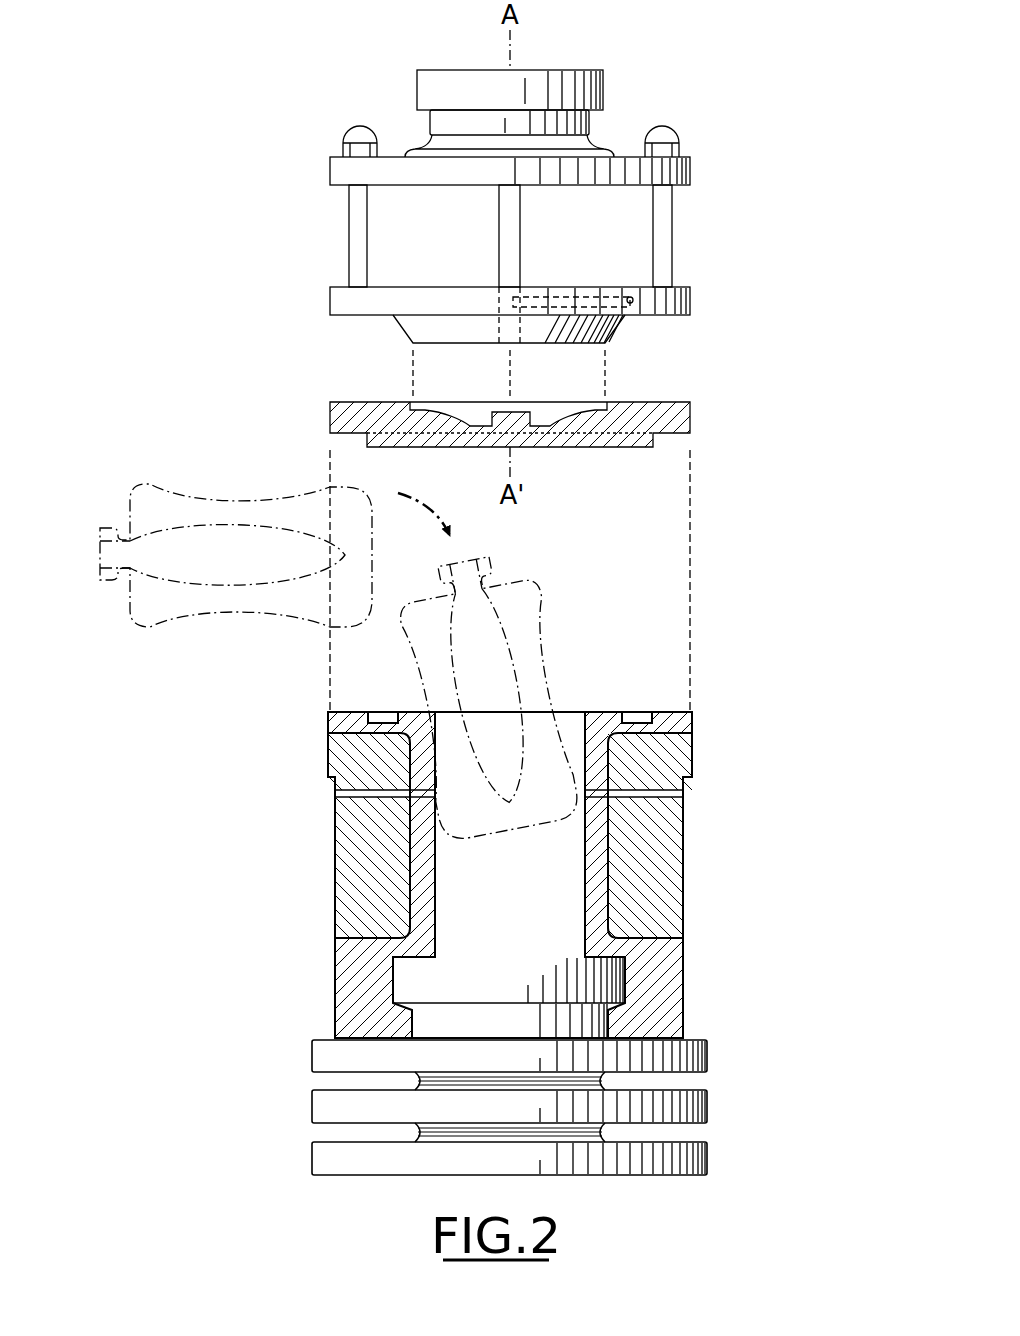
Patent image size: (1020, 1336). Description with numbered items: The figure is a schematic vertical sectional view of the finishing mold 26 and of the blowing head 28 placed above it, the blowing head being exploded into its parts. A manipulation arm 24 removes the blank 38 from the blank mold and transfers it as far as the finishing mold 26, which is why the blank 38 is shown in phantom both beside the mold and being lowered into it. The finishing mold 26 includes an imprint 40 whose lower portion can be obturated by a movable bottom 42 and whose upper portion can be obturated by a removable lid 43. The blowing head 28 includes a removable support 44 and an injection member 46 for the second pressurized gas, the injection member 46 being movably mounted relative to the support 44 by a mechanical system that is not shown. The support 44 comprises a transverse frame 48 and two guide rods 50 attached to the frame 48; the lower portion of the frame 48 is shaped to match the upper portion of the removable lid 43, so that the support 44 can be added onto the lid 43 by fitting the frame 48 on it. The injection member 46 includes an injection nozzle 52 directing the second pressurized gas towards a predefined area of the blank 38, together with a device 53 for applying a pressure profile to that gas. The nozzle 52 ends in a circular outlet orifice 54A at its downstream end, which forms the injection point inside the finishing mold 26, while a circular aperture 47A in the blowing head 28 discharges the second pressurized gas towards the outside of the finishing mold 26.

The manipulation arm 24 is at (448, 515).
The finishing mold 26 is at (479, 871).
The blowing head 28 is at (435, 189).
The blank 38 is at (157, 500).
The imprint 40 is at (510, 880).
The movable bottom 42 is at (510, 1025).
The removable lid 43 is at (345, 410).
The removable support 44 is at (454, 293).
The injection member 46 is at (510, 102).
The discharge aperture 47A is at (631, 303).
The transverse frame 48 is at (385, 298).
The guide rods 50 is at (349, 223).
The injection nozzle 52 is at (494, 262).
The pressure profile device 53 is at (557, 77).
The outlet orifice 54A is at (513, 287).